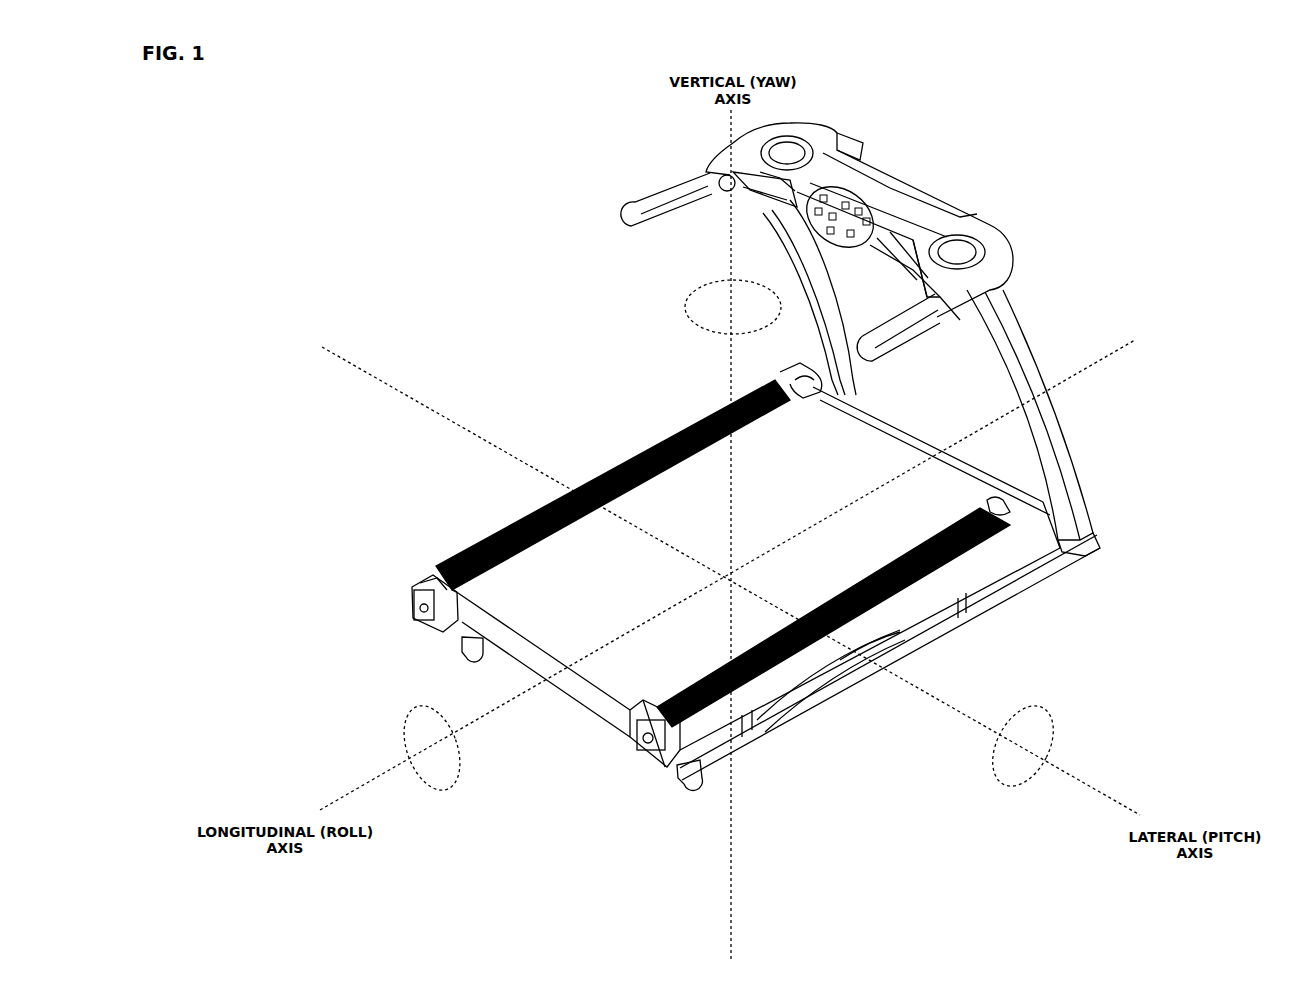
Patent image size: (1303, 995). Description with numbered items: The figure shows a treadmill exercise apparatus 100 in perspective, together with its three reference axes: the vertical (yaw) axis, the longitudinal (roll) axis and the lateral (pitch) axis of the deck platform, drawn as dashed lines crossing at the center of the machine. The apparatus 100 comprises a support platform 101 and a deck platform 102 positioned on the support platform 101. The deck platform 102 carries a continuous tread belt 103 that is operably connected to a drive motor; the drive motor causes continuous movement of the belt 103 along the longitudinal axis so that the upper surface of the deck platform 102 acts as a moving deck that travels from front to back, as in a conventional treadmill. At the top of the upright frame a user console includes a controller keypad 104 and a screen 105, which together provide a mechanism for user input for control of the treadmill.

The treadmill exercise apparatus 100 is at (620, 222).
The support platform 101 is at (692, 778).
The deck platform 102 is at (1060, 500).
The continuous tread belt 103 is at (553, 585).
The controller keypad 104 is at (855, 150).
The screen 105 is at (868, 210).